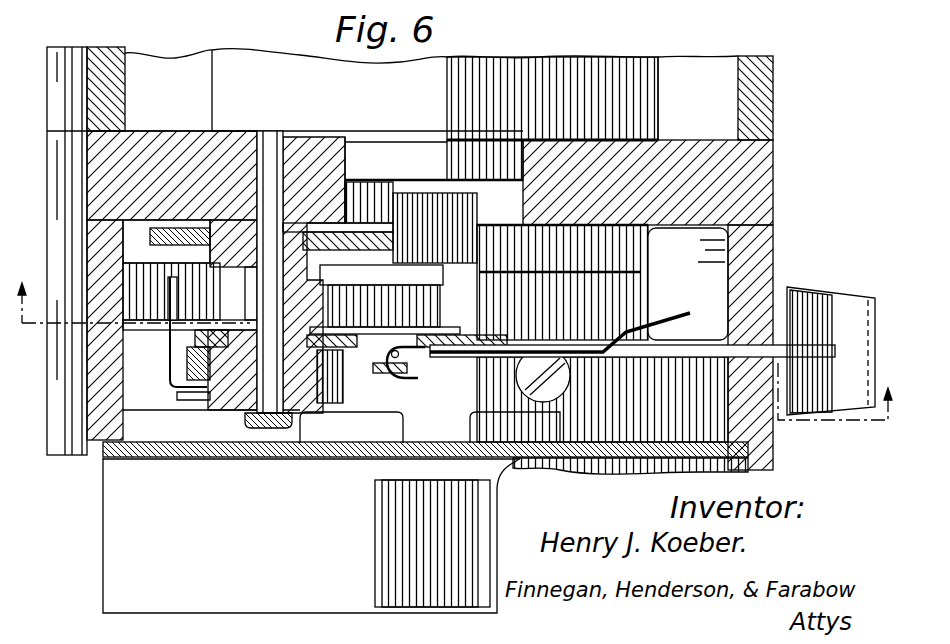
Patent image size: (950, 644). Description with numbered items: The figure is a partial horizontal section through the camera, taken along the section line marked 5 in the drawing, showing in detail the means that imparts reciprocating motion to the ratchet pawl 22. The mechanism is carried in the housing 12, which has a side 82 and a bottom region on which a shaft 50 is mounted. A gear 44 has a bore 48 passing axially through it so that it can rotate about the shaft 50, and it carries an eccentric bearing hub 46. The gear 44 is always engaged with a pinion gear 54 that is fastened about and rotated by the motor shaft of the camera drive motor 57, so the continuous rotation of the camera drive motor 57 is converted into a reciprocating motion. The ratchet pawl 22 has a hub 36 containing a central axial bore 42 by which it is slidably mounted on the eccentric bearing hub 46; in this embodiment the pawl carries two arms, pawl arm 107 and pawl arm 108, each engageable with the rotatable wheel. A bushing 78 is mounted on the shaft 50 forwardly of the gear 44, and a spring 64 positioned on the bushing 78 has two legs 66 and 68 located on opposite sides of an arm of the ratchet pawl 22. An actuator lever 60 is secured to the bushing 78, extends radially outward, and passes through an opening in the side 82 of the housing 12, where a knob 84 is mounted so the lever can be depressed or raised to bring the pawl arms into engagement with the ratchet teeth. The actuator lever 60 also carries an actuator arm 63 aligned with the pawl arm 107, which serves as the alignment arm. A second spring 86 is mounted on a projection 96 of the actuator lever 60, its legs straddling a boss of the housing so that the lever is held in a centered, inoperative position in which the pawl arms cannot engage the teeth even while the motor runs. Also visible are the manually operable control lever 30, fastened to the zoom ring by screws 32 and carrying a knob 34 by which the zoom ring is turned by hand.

The section line 5- 5 is at (453, 337).
The housing 12 is at (155, 460).
The ratchet pawl 22 is at (185, 365).
The control lever 30 is at (420, 423).
The screws 32 is at (343, 380).
The knob 34 is at (395, 517).
The hub 36 is at (318, 282).
The central axial bore 42 is at (315, 313).
The gear 44 is at (310, 220).
The eccentric bearing hub 46 is at (363, 180).
The bore 48 is at (303, 243).
The shaft 50 is at (247, 400).
The pinion gear 54 is at (478, 214).
The camera drive motor 57 is at (288, 93).
The actuator lever 60 is at (682, 350).
The actuator arm 63 is at (163, 350).
The spring 64 is at (332, 392).
The leg 66 is at (187, 392).
The leg 68 is at (203, 222).
The bushing 78 is at (292, 420).
The side 82 is at (773, 198).
The knob 84 is at (833, 307).
The second spring 86 is at (440, 360).
The projection 96 is at (390, 375).
The pawl arm 107 is at (148, 297).
The pawl arm 108 is at (393, 317).